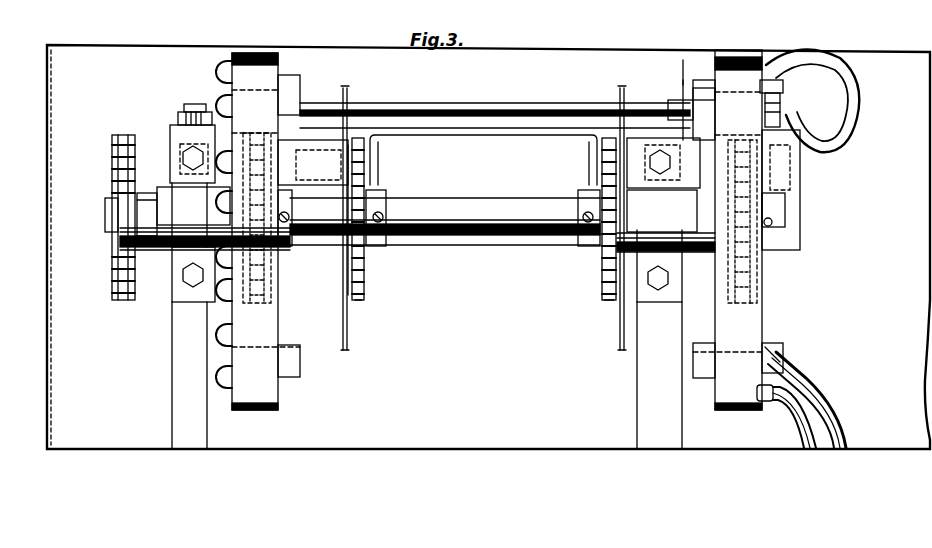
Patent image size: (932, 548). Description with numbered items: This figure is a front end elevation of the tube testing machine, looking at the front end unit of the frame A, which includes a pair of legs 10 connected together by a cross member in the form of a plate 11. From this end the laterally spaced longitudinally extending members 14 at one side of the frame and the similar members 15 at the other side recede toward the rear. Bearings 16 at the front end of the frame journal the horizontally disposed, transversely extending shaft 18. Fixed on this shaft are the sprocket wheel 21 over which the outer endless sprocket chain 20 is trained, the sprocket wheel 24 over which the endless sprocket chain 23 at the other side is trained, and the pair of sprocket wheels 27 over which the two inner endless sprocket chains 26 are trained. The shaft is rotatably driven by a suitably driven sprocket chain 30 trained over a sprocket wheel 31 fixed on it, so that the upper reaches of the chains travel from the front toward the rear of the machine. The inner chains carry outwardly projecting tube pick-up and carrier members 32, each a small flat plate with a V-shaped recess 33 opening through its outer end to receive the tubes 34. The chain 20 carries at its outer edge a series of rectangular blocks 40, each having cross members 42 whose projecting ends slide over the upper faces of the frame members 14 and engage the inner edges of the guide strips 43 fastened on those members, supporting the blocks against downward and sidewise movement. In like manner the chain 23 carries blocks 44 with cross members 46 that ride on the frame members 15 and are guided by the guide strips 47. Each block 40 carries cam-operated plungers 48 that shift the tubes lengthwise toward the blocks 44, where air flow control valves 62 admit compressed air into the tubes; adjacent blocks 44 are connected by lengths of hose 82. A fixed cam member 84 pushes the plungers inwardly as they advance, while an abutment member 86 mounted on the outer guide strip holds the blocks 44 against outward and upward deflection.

The legs 10 is at (175, 405).
The plate 11 is at (494, 255).
The longitudinally extending members 14 is at (175, 160).
The longitudinally extending members 15 is at (795, 168).
The bearings 16 is at (175, 252).
The shaft 18 is at (473, 212).
The outer endless sprocket chain 20 is at (270, 292).
The sprocket wheel 21 is at (268, 258).
The endless sprocket chain 23 is at (752, 272).
The sprocket wheel 24 is at (757, 305).
The endless sprocket chains 26 is at (366, 288).
The sprocket wheels 27 is at (366, 178).
The sprocket chain 30 is at (112, 152).
The sprocket wheel 31 is at (112, 240).
The tube pick-up and carrier members 32 is at (350, 98).
The V-shaped recess 33 is at (47, 296).
The tubes 34 is at (488, 108).
The blocks 40 is at (276, 406).
The cross members 42 is at (298, 92).
The guide strips 43 is at (366, 128).
The blocks 44 is at (748, 335).
The cross members 46 is at (690, 77).
The guide strips 47 is at (620, 130).
The cam-operated plungers 48 is at (222, 375).
The air flow control valves 62 is at (858, 98).
The hose 82 is at (838, 412).
The cam member 84 is at (210, 120).
The abutment member 86 is at (787, 97).
The frame A is at (812, 215).